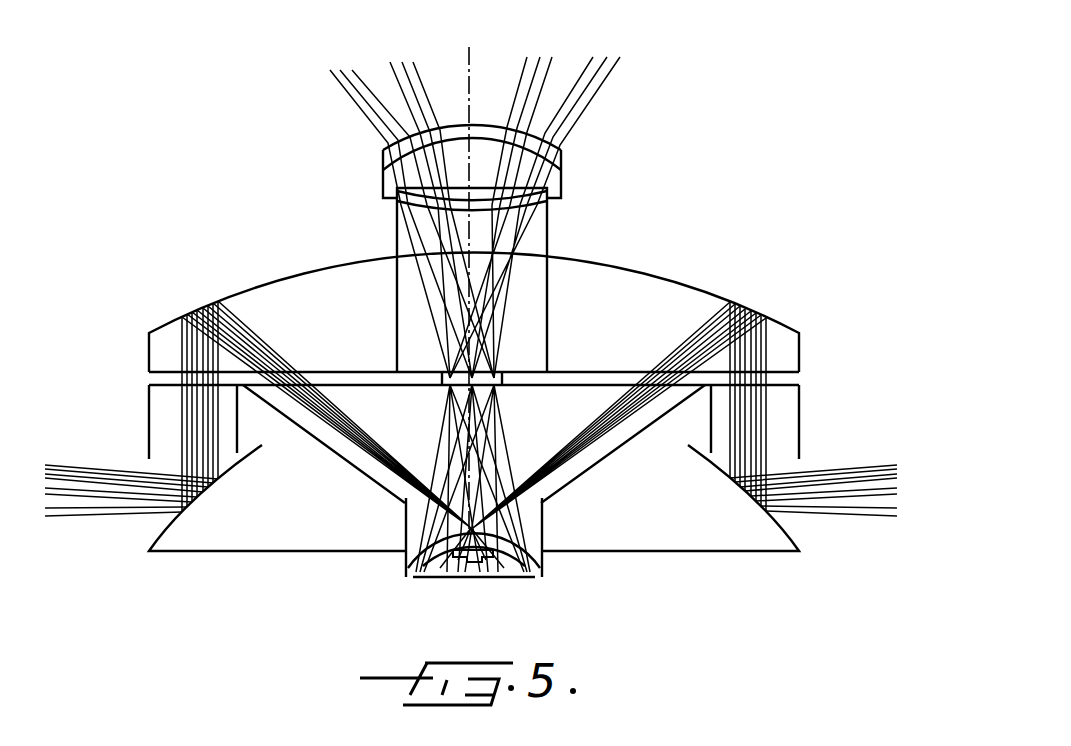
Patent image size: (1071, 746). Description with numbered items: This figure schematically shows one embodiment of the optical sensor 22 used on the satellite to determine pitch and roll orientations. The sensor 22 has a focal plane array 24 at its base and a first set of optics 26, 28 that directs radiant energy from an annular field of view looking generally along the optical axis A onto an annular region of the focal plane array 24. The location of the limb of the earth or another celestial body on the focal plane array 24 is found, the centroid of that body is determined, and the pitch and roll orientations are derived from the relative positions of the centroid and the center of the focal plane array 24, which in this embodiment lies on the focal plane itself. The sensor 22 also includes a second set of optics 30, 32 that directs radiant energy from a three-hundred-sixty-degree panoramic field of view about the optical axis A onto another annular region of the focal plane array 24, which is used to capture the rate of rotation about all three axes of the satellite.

The optical axis A is at (467, 68).
The optical sensor 22 is at (273, 173).
The focal plane array 24 is at (512, 577).
The optics 26 is at (573, 155).
The optics 28 is at (402, 541).
The optics 30 is at (155, 540).
The optics 32 is at (162, 332).